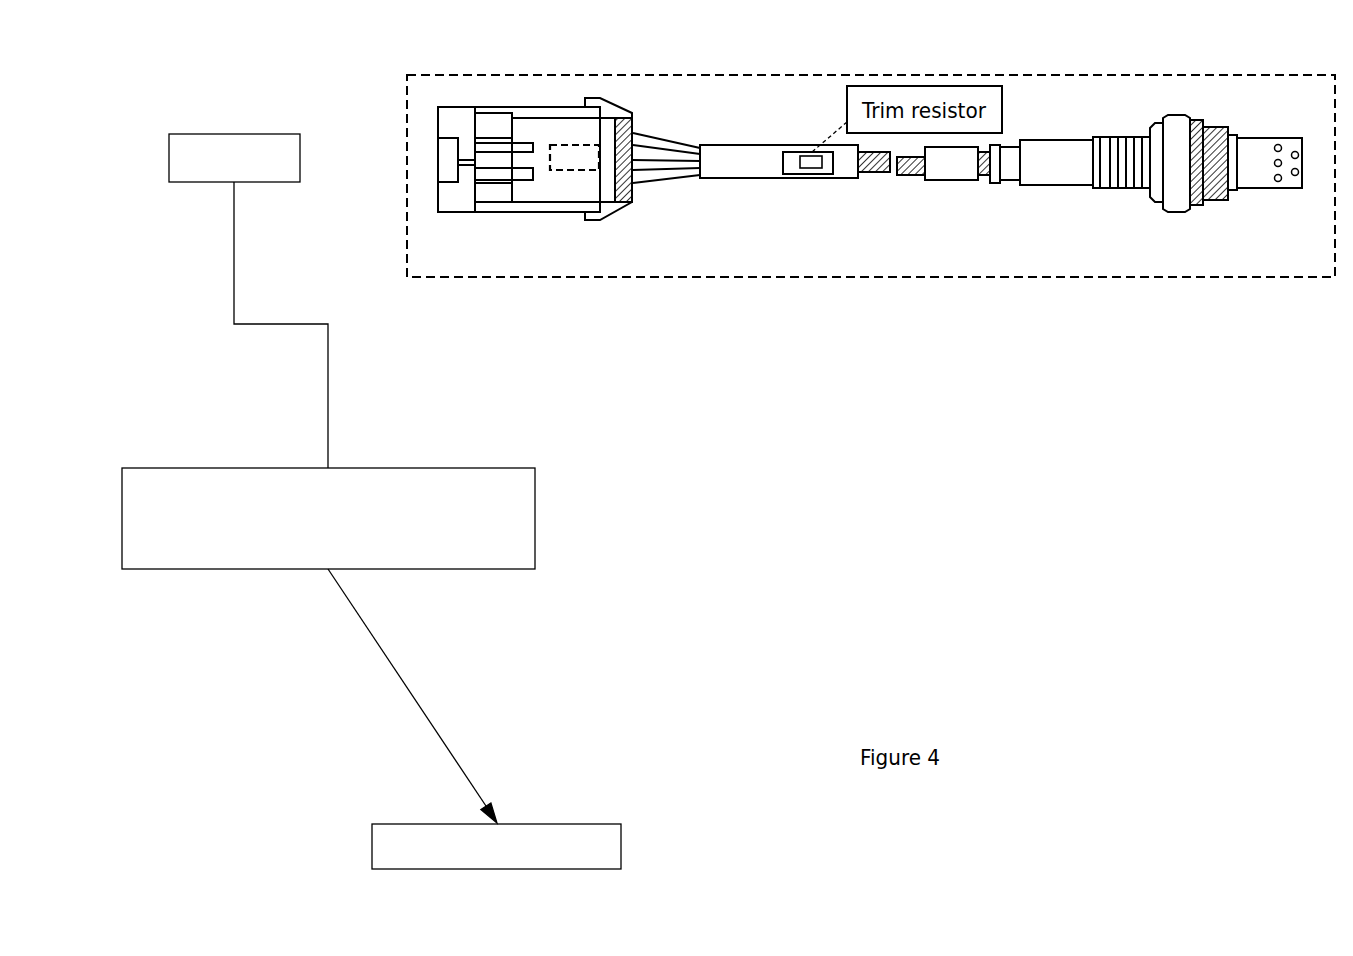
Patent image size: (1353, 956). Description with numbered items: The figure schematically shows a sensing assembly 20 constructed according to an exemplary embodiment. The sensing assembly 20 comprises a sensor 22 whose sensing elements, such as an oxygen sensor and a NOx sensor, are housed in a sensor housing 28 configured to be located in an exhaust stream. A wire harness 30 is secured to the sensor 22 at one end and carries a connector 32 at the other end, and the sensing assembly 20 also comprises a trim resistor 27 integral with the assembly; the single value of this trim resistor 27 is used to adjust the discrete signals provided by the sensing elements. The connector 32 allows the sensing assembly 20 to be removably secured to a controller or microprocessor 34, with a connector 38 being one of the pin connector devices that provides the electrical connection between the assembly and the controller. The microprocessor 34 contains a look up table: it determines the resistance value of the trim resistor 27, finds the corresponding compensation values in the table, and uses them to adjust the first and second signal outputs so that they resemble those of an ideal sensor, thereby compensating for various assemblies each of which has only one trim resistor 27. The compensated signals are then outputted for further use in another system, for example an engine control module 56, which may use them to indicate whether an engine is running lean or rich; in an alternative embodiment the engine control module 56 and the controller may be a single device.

The sensing assembly 20 is at (1027, 278).
The sensor 22 is at (1160, 128).
The trim resistor 27 is at (585, 170).
The sensor housing 28 is at (1240, 147).
The wire harness 30 is at (715, 158).
The connector 32 is at (513, 123).
The microprocessor 34 is at (515, 503).
The connector 38 is at (240, 158).
The engine control module 56 is at (548, 837).